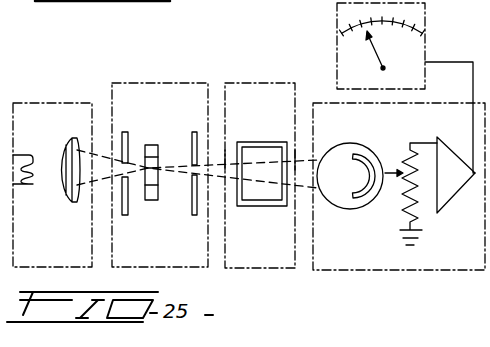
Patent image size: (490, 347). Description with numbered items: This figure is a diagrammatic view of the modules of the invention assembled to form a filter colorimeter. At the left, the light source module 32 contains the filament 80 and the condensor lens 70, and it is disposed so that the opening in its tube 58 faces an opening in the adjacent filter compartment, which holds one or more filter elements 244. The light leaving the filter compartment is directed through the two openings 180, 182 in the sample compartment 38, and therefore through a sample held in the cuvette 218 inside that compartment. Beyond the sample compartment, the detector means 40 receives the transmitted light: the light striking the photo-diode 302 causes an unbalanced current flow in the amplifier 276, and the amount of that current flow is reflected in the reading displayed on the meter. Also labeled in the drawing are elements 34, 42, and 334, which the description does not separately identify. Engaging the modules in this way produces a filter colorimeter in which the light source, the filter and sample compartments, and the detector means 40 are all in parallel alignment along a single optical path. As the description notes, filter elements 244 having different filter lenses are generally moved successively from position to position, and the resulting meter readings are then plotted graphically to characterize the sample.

The light source module 32 is at (53, 268).
The slit / chopper unit 34 is at (157, 82).
The sample compartment 38 is at (280, 268).
The detector means 40 is at (418, 270).
The meter / indicator 42 is at (436, 57).
The tube 58 is at (99, 157).
The condensor lens 70 is at (68, 203).
The filament 80 is at (20, 153).
The opening 180 is at (225, 160).
The opening 182 is at (297, 160).
The cuvette 218 is at (255, 141).
The filter element 244 is at (150, 145).
The amplifier 276 is at (457, 153).
The photo-diode 302 is at (363, 209).
The potentiometer resistor 334 is at (410, 162).